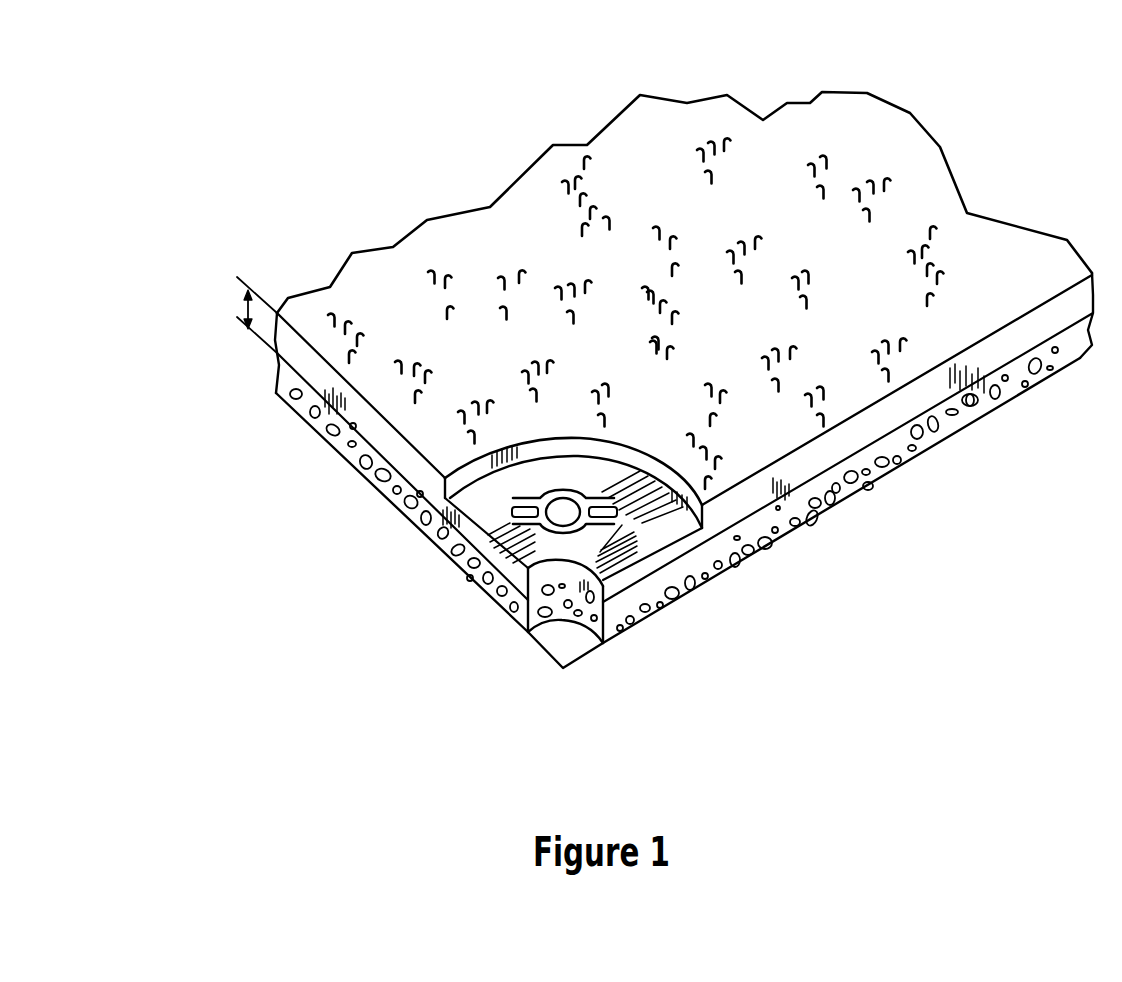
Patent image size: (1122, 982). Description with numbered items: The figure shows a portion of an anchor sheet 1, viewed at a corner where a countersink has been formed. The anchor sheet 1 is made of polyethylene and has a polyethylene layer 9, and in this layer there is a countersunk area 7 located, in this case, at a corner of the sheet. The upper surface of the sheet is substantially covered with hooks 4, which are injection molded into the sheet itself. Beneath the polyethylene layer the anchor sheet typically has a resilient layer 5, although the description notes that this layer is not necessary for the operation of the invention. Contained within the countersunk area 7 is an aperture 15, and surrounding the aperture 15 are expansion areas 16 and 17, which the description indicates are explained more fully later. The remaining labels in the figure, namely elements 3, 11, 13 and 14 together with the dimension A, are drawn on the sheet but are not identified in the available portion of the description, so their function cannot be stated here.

The anchor sheet 1 is at (940, 493).
The artificial turf layer 3 is at (887, 167).
The hooks 4 is at (957, 290).
The resilient layer 5 is at (980, 399).
The countersunk area 7 is at (652, 542).
The polyethylene layer 9 is at (800, 473).
The turf backing layer 11 is at (357, 418).
The drainage layer 13 is at (443, 550).
The subgrade layer 14 is at (560, 643).
The aperture 15 is at (537, 520).
The expansion area 16 is at (624, 522).
The expansion area 17 is at (634, 500).
The turf layer thickness A is at (245, 305).